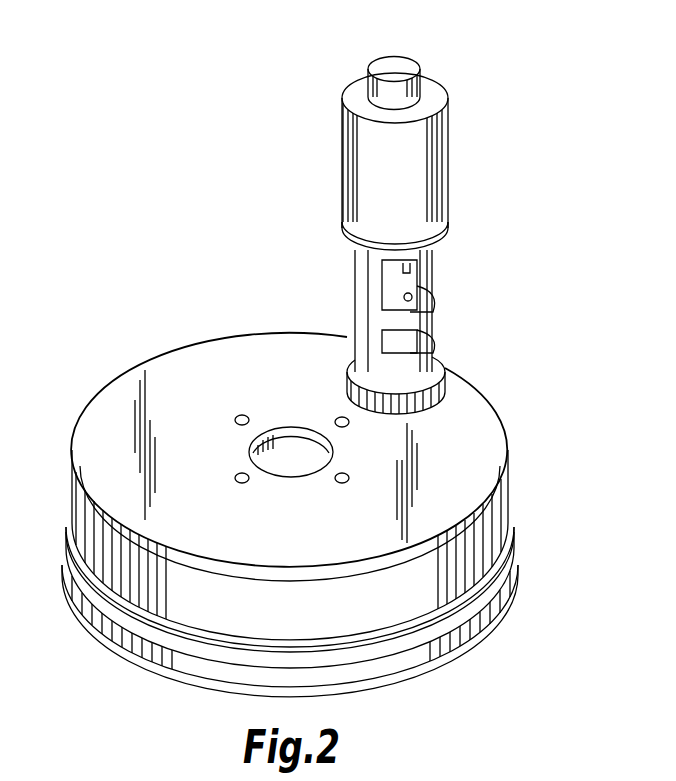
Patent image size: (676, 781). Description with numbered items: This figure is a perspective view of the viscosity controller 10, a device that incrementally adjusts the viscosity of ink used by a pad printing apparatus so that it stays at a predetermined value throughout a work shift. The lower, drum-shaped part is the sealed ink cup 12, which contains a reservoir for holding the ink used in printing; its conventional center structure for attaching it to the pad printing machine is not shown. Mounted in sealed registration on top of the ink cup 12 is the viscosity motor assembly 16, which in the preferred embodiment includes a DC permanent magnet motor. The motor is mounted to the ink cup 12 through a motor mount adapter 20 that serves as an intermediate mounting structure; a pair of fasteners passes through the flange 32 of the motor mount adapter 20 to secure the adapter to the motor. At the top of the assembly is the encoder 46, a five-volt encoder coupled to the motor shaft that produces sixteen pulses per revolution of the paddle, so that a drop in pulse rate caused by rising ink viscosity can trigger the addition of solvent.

The viscosity controller 10 is at (302, 478).
The sealed ink cup 12 is at (435, 663).
The viscosity motor assembly 16 is at (393, 236).
The motor mount adapter 20 is at (365, 298).
The flange 32 is at (345, 232).
The encoder 46 is at (380, 95).